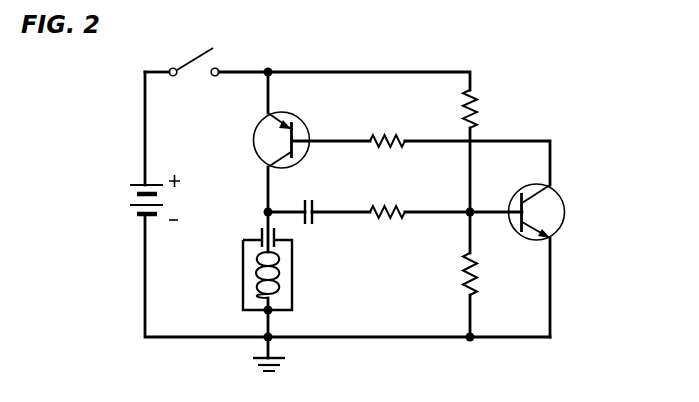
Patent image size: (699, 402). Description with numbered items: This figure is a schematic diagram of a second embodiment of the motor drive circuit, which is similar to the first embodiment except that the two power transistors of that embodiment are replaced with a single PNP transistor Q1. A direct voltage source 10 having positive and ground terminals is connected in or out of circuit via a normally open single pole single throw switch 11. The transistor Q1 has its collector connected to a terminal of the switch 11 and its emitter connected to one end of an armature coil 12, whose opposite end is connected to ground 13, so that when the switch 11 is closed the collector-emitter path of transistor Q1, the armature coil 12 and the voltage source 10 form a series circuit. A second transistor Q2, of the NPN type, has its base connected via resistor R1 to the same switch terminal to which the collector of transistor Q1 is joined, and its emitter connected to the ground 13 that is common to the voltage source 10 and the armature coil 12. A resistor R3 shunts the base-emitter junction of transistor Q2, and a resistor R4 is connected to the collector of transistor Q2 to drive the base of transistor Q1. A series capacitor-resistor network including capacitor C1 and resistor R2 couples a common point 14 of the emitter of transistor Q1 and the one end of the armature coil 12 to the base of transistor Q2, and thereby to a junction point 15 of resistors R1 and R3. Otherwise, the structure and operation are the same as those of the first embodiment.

The direct voltage source 10 is at (128, 197).
The normally open single pole single throw switch 11 is at (193, 57).
The armature coil 12 is at (278, 281).
The ground 13 is at (262, 342).
The common point 14 is at (265, 208).
The junction point 15 is at (478, 217).
The transistor Q1 is at (267, 140).
The second transistor Q2 is at (554, 212).
The resistor R1 is at (484, 109).
The resistor R2 is at (387, 227).
The resistor R3 is at (452, 274).
The resistor R4 is at (387, 125).
The capacitor C1 is at (306, 200).